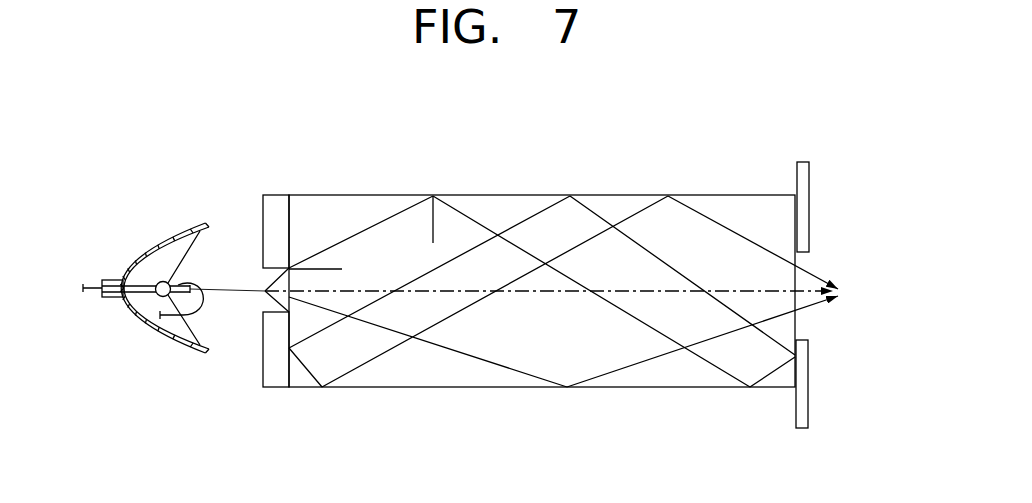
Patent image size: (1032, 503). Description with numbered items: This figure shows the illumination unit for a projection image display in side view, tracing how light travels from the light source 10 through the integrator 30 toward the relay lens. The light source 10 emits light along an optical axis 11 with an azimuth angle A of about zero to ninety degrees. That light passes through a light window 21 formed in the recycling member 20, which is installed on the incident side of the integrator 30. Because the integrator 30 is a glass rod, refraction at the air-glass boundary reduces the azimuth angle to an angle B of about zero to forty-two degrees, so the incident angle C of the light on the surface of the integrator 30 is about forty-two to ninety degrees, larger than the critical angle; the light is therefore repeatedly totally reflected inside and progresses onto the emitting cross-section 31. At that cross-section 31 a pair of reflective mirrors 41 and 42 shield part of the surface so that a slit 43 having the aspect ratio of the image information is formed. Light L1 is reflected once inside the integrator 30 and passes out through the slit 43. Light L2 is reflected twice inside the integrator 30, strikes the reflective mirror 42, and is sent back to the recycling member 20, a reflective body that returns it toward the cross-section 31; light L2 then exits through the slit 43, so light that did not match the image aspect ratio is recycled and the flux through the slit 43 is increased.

The light source 10 is at (136, 216).
The optical axis 11 is at (545, 298).
The recycling member 20 is at (278, 194).
The light window 21 is at (267, 302).
The integrator 30 is at (500, 195).
The cross-section 31 is at (800, 334).
The reflective mirror 41 is at (803, 160).
The reflective mirror 42 is at (801, 428).
The slit 43 is at (800, 257).
The azimuth angle A is at (288, 267).
The azimuth angle B is at (308, 268).
The incident angle C is at (433, 196).
The light L1 is at (813, 313).
The light L2 is at (813, 272).